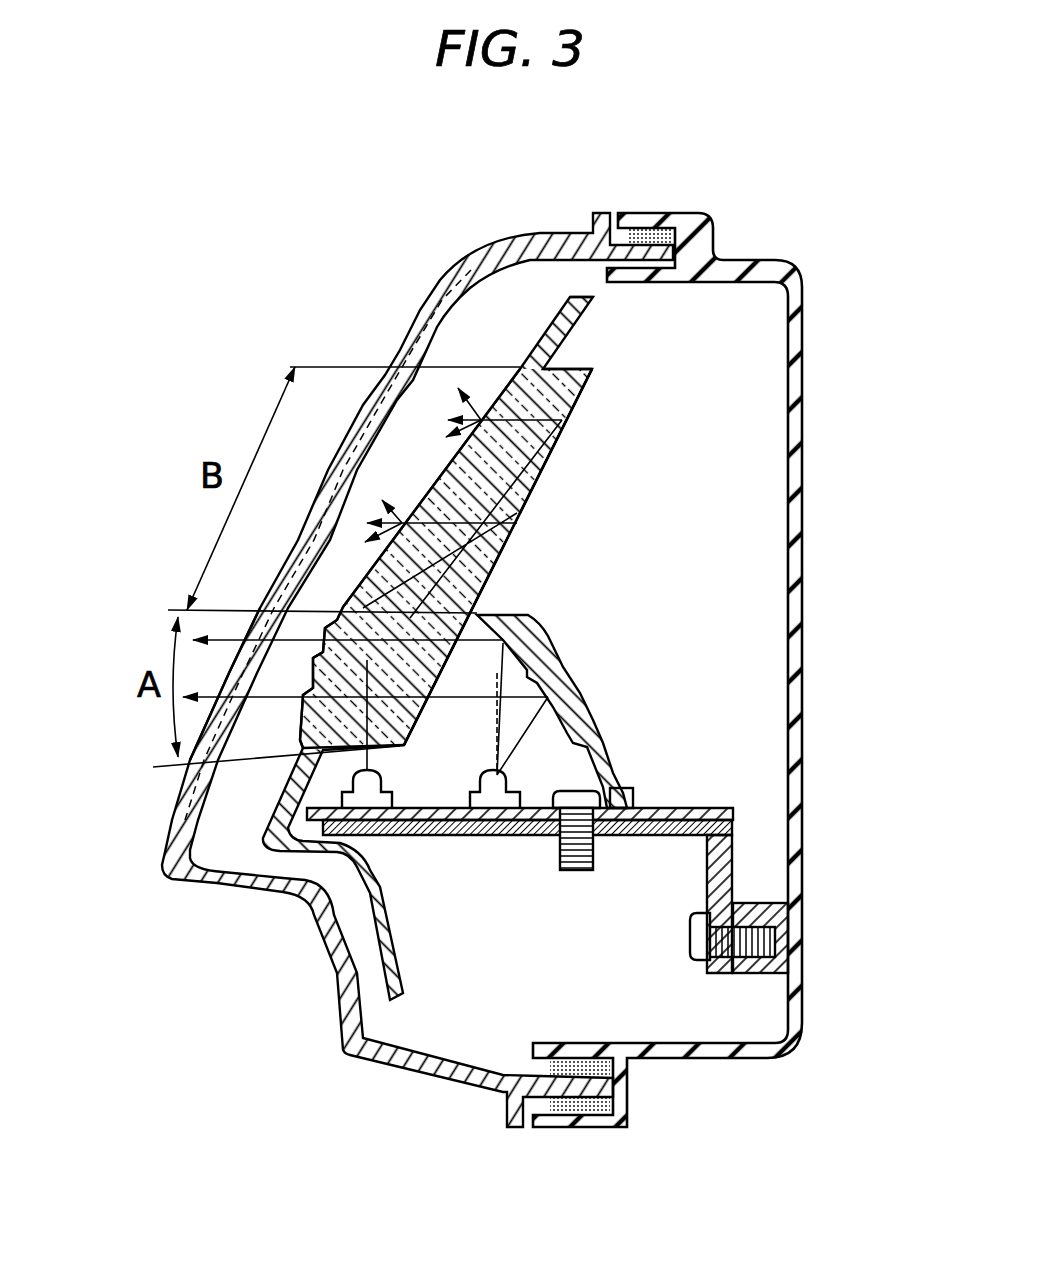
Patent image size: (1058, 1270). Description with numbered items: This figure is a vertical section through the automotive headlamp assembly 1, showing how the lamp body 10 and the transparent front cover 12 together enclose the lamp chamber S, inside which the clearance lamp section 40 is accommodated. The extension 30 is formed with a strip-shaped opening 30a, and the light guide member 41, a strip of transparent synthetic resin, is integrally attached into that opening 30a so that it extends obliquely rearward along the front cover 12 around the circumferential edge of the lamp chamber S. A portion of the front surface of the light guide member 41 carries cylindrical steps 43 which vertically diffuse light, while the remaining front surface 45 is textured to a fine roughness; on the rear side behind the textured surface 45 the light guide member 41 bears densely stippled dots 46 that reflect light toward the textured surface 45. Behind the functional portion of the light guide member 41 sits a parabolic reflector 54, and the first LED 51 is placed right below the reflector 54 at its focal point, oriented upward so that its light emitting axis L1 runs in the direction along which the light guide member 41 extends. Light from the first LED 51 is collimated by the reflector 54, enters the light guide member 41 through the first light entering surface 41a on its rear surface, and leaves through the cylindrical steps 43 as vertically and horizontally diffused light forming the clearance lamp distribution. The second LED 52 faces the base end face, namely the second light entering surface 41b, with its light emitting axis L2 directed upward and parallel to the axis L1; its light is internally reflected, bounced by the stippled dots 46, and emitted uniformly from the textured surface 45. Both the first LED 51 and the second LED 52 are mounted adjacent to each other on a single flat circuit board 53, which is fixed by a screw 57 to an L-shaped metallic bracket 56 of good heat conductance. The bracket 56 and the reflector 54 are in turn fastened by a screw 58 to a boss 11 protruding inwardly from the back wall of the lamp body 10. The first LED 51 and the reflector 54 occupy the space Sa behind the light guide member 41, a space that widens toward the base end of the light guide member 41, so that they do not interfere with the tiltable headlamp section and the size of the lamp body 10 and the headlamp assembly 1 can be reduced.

The automotive headlamp assembly 1 is at (287, 255).
The lamp body 10 is at (803, 466).
The boss 11 is at (750, 973).
The front cover 12 is at (415, 320).
The extension 30 is at (257, 807).
The opening 30a is at (522, 367).
The clearance lamp section 40 is at (263, 417).
The light guide member 41 is at (353, 572).
The first light entering surface 41a is at (445, 665).
The second light entering surface 41b is at (303, 777).
The cylindrical steps 43 is at (322, 675).
The textured surface 45 is at (443, 465).
The stippled dots 46 is at (580, 390).
The first LED 51 is at (513, 787).
The second LED 52 is at (392, 797).
The circuit board 53 is at (462, 836).
The reflector 54 is at (560, 654).
The bracket 56 is at (733, 860).
The screw 57 is at (605, 795).
The screw 58 is at (690, 960).
The lamp chamber S is at (727, 317).
The space Sa is at (642, 670).
The light emitting axis L1 is at (493, 836).
The light emitting axis L2 is at (385, 837).